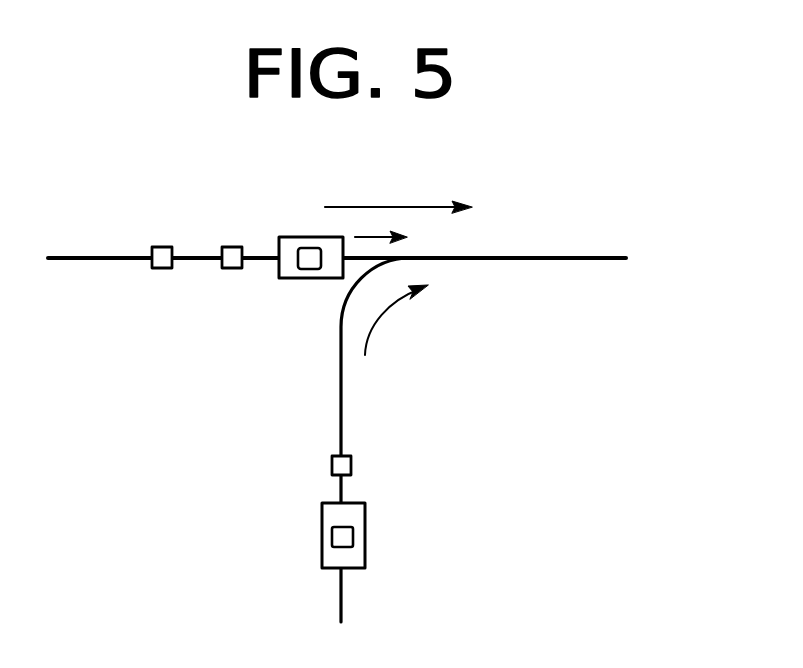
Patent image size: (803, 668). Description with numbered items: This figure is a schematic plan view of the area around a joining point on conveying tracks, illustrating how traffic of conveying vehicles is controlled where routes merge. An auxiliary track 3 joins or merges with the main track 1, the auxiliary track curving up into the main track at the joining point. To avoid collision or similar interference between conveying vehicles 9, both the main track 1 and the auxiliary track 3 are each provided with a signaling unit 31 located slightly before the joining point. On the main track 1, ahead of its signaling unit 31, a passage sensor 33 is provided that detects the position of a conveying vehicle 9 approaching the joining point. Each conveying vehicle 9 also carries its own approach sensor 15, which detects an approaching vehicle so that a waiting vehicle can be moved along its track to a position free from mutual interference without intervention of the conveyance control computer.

The main track 1 is at (563, 248).
The auxiliary track 3 is at (343, 587).
The conveying vehicle 9 is at (299, 278).
The approach sensor 15 is at (307, 248).
The signaling unit 31 is at (228, 247).
The passage sensor 33 is at (155, 247).